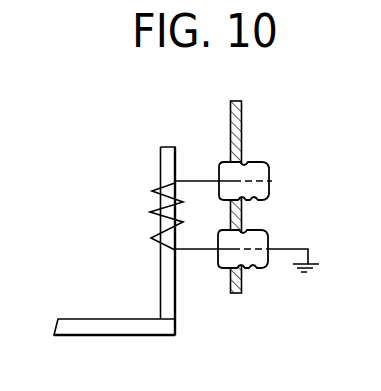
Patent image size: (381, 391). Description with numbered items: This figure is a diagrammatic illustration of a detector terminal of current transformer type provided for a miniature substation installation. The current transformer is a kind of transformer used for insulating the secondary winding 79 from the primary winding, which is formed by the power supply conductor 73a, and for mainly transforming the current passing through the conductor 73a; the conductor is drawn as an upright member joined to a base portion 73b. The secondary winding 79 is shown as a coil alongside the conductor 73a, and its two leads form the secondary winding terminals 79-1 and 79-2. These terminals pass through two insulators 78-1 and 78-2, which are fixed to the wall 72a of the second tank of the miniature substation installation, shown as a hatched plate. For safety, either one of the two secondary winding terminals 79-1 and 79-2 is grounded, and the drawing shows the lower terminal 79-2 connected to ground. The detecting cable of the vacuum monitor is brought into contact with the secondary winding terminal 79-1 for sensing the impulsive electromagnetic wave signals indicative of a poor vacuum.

The wall 72a is at (242, 113).
The power supply conductor 73a is at (161, 275).
The base plate 73b is at (113, 329).
The secondary winding 79 is at (152, 190).
The secondary winding terminal 79-1 is at (197, 178).
The secondary winding terminal 79-2 is at (200, 258).
The insulator 78-1 is at (262, 173).
The insulator 78-2 is at (262, 241).